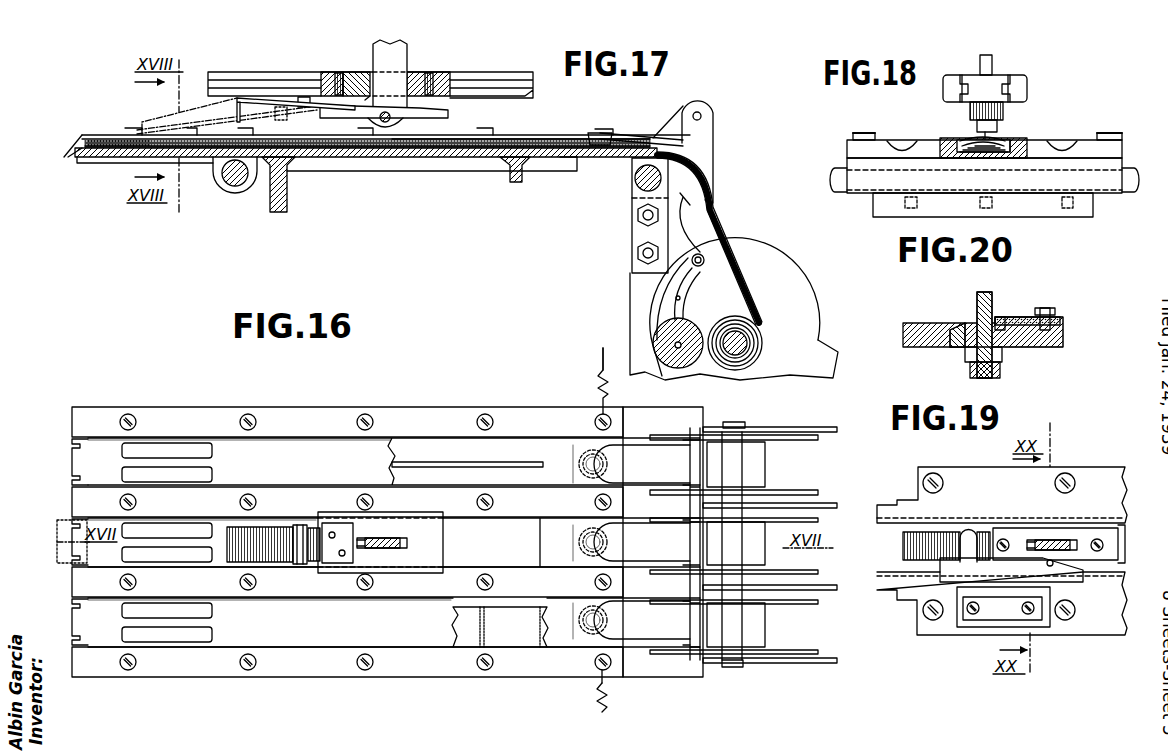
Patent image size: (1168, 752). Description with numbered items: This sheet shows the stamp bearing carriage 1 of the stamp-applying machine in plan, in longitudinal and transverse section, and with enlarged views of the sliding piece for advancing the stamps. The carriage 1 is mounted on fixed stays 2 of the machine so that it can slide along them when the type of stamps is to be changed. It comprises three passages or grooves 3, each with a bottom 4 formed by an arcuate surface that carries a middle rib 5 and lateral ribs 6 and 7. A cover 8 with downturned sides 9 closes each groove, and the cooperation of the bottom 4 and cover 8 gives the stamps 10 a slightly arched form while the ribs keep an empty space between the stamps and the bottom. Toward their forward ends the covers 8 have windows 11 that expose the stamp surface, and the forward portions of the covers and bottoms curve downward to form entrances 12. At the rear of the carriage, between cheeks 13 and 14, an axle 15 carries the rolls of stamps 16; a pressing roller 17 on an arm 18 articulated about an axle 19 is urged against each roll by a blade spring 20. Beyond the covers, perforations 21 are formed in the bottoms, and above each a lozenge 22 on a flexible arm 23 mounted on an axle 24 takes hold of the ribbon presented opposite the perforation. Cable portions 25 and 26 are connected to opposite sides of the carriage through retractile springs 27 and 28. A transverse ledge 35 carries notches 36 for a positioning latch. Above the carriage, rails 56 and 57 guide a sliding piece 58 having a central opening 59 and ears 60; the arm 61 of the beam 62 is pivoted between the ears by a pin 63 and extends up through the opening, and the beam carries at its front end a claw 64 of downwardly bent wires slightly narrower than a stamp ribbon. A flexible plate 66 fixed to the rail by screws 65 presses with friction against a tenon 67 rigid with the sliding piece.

In FIG. 17, the stamp bearing carriage 1 is at (437, 157).
In FIG. 18, the stamp bearing carriage 1 is at (948, 160).
In FIG. 17, the fixed stays 2 is at (228, 180).
In FIG. 18, the fixed stays 2 is at (984, 180).
In FIG. 16, the passages or grooves 3 is at (562, 559).
In FIG. 18, the passages or grooves 3 is at (898, 138).
In FIG. 17, the bottom 4 is at (355, 157).
In FIG. 18, the bottom 4 is at (975, 160).
In FIG. 16, the middle rib 5 is at (490, 463).
In FIG. 18, the middle rib 5 is at (988, 160).
In FIG. 18, the lateral rib 6 is at (963, 160).
In FIG. 18, the lateral rib 7 is at (1018, 160).
In FIG. 17, the cover 8 is at (518, 140).
In FIG. 16, the cover 8 is at (302, 537).
In FIG. 18, the downturned sides 9 is at (965, 142).
In FIG. 17, the stamps 10 is at (397, 148).
In FIG. 16, the stamps 10 is at (500, 627).
In FIG. 18, the stamps 10 is at (1003, 160).
In FIG. 17, the windows 11 is at (151, 140).
In FIG. 16, the windows 11 is at (197, 453).
In FIG. 18, the windows 11 is at (1000, 141).
In FIG. 17, the entrances 12 is at (83, 136).
In FIG. 16, the entrances 12 is at (97, 570).
In FIG. 18, the entrances 12 is at (912, 141).
In FIG. 16, the cheek 13 is at (790, 428).
In FIG. 16, the cheek 14 is at (790, 663).
In FIG. 17, the axle 15 is at (748, 356).
In FIG. 16, the axle 15 is at (733, 422).
In FIG. 17, the rolls of stamps 16 is at (761, 345).
In FIG. 16, the rolls of stamps 16 is at (736, 544).
In FIG. 17, the pressing roller 17 is at (684, 330).
In FIG. 17, the arm 18 is at (684, 296).
In FIG. 17, the axle 19 is at (702, 266).
In FIG. 17, the blade spring 20 is at (698, 222).
In FIG. 17, the perforations 21 is at (578, 158).
In FIG. 16, the perforations 21 is at (598, 469).
In FIG. 17, the lozenge 22 is at (592, 135).
In FIG. 16, the lozenge 22 is at (598, 460).
In FIG. 17, the flexible arm 23 is at (628, 136).
In FIG. 16, the flexible arm 23 is at (675, 544).
In FIG. 17, the axle 24 is at (702, 116).
In FIG. 16, the axle 24 is at (690, 472).
In FIG. 16, the cable portion 25 is at (601, 367).
In FIG. 16, the cable portion 26 is at (606, 688).
In FIG. 16, the retractile spring 27 is at (598, 386).
In FIG. 16, the retractile spring 28 is at (596, 696).
In FIG. 17, the ledge 35 is at (270, 178).
In FIG. 18, the ledge 35 is at (983, 205).
In FIG. 17, the notches 36 is at (287, 205).
In FIG. 18, the notches 36 is at (905, 204).
In FIG. 17, the rail 56 is at (278, 76).
In FIG. 18, the rail 56 is at (957, 78).
In FIG. 20, the rail 56 is at (918, 326).
In FIG. 19, the rail 56 is at (1002, 495).
In FIG. 18, the rail 57 is at (1027, 85).
In FIG. 20, the rail 57 is at (1063, 323).
In FIG. 19, the rail 57 is at (1108, 598).
In FIG. 17, the sliding piece 58 is at (440, 76).
In FIG. 16, the sliding piece 58 is at (380, 542).
In FIG. 18, the sliding piece 58 is at (1010, 78).
In FIG. 20, the sliding piece 58 is at (964, 327).
In FIG. 19, the sliding piece 58 is at (1092, 540).
In FIG. 17, the central opening 59 is at (366, 98).
In FIG. 16, the central opening 59 is at (400, 549).
In FIG. 19, the central opening 59 is at (1028, 540).
In FIG. 17, the ears 60 is at (372, 121).
In FIG. 20, the ears 60 is at (967, 352).
In FIG. 17, the arm 61 is at (390, 73).
In FIG. 16, the arm 61 is at (388, 538).
In FIG. 18, the arm 61 is at (989, 66).
In FIG. 20, the arm 61 is at (980, 310).
In FIG. 19, the arm 61 is at (1060, 540).
In FIG. 17, the beam 62 is at (450, 114).
In FIG. 17, the pin 63 is at (392, 121).
In FIG. 20, the pin 63 is at (972, 370).
In FIG. 17, the claw 64 is at (238, 120).
In FIG. 16, the claw 64 is at (262, 540).
In FIG. 18, the claw 64 is at (986, 105).
In FIG. 19, the claw 64 is at (905, 548).
In FIG. 20, the screws 65 is at (1046, 310).
In FIG. 20, the flexible plate 66 is at (1016, 318).
In FIG. 19, the flexible plate 66 is at (1011, 592).
In FIG. 20, the tenon 67 is at (1000, 317).
In FIG. 19, the tenon 67 is at (1066, 576).